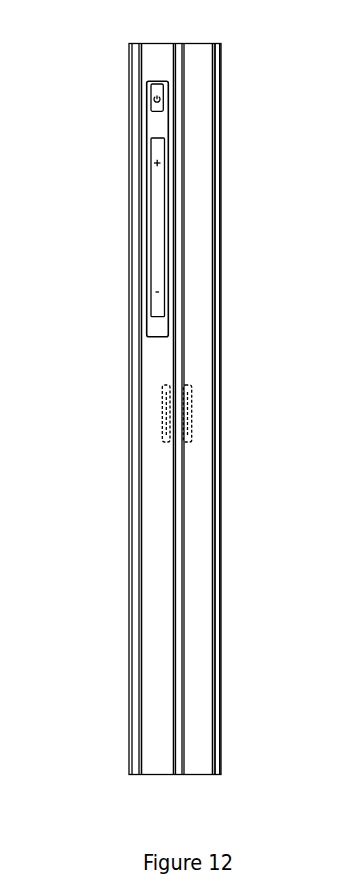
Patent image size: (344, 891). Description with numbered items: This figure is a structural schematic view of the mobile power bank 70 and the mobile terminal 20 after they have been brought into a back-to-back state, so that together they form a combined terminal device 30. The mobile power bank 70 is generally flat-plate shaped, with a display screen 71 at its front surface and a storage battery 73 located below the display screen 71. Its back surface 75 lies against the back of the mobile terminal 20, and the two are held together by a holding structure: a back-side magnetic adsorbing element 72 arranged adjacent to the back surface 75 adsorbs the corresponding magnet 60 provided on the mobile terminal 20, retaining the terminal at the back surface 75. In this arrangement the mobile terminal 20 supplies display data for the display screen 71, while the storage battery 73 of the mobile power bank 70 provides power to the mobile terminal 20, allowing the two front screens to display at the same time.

The combined terminal device 30 is at (73, 65).
The mobile power bank 70 is at (206, 78).
The display screen 71 is at (215, 142).
The storage battery 73 is at (201, 204).
The back surface 75 is at (182, 328).
The back-side magnetic adsorbing element 72 is at (188, 412).
The magnet 60 is at (165, 408).
The mobile terminal 20 is at (153, 513).